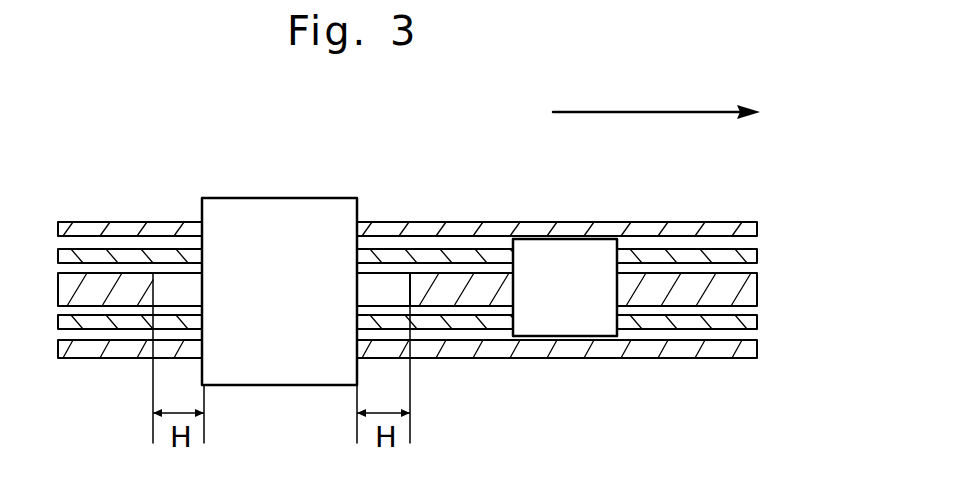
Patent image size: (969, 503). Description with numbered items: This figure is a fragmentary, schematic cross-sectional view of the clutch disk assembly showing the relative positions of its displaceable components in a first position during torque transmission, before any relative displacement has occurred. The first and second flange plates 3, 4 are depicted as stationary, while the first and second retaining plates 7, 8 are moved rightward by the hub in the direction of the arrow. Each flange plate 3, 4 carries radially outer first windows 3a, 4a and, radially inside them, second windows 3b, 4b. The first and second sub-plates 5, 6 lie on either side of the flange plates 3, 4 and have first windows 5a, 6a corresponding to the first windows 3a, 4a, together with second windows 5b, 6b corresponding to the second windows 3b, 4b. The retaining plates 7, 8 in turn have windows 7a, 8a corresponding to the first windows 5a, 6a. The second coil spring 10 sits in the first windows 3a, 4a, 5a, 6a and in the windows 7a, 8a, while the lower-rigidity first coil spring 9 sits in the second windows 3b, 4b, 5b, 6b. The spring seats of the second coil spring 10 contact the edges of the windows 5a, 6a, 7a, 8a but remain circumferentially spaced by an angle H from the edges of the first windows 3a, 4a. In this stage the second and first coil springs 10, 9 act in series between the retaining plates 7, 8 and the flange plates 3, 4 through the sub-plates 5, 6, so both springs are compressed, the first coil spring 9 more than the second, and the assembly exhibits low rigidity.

The first flange plate 3 is at (442, 288).
The second flange plate 4 is at (735, 287).
The first window of the first flange plate 3a is at (406, 219).
The first window of the second flange plate 4a is at (410, 273).
The second window of the first flange plate 3b is at (639, 224).
The second window of the second flange plate 4b is at (617, 278).
The first sub-plate 5 is at (733, 252).
The first window of the first sub-plate 5a is at (203, 257).
The second window of the first sub-plate 5b is at (513, 255).
The second sub-plate 6 is at (745, 318).
The first window of the second sub-plate 6a is at (203, 322).
The second window of the second sub-plate 6b is at (513, 323).
The first retaining plate 7 is at (118, 223).
The window of the first retaining plate 7a is at (203, 231).
The second retaining plate 8 is at (105, 358).
The window of the second retaining plate 8a is at (203, 350).
The first coil spring 9 is at (545, 268).
The second coil spring 10 is at (300, 227).